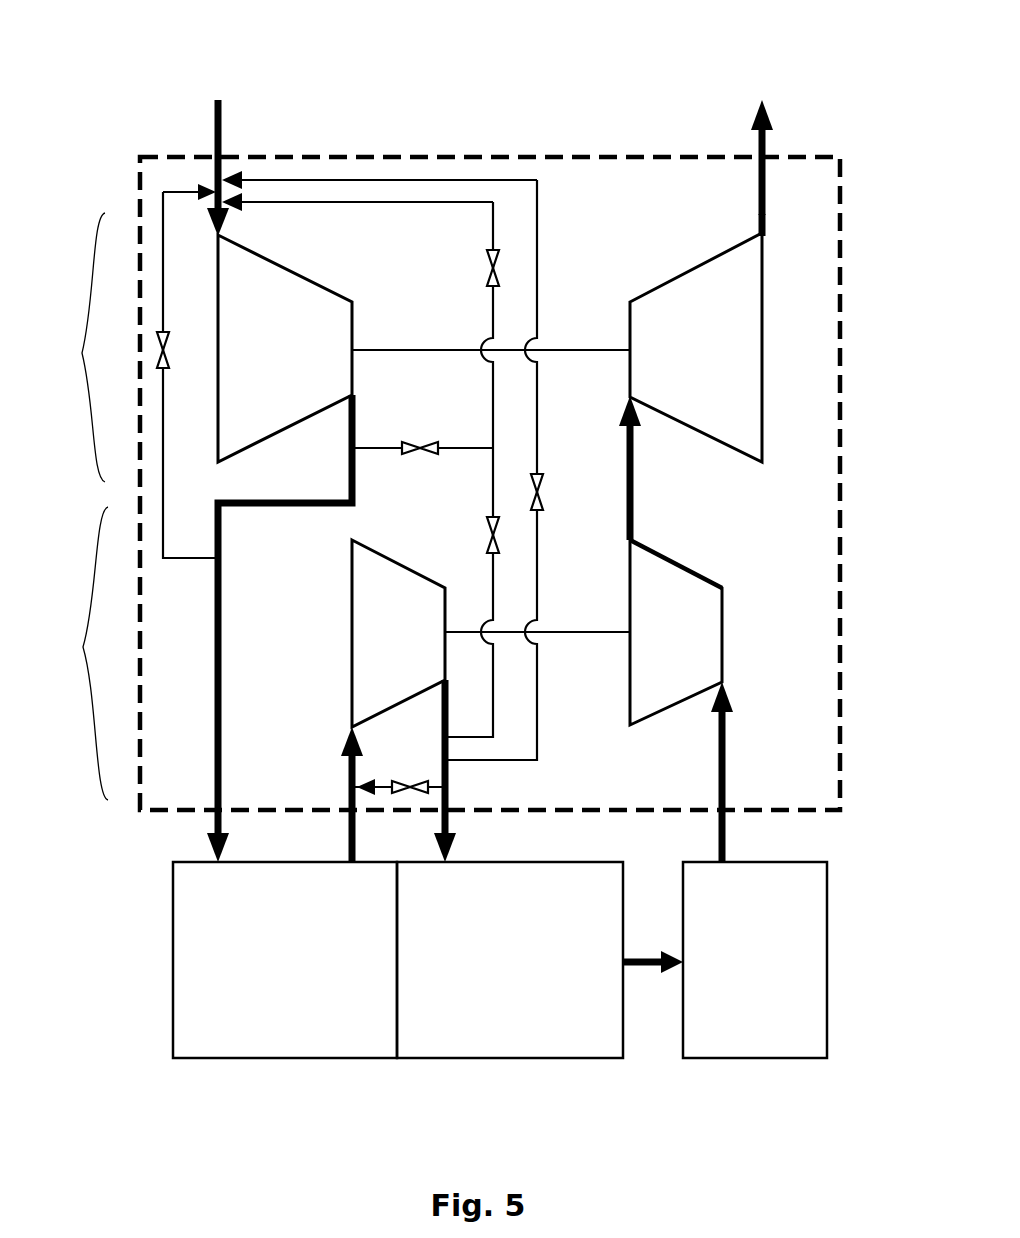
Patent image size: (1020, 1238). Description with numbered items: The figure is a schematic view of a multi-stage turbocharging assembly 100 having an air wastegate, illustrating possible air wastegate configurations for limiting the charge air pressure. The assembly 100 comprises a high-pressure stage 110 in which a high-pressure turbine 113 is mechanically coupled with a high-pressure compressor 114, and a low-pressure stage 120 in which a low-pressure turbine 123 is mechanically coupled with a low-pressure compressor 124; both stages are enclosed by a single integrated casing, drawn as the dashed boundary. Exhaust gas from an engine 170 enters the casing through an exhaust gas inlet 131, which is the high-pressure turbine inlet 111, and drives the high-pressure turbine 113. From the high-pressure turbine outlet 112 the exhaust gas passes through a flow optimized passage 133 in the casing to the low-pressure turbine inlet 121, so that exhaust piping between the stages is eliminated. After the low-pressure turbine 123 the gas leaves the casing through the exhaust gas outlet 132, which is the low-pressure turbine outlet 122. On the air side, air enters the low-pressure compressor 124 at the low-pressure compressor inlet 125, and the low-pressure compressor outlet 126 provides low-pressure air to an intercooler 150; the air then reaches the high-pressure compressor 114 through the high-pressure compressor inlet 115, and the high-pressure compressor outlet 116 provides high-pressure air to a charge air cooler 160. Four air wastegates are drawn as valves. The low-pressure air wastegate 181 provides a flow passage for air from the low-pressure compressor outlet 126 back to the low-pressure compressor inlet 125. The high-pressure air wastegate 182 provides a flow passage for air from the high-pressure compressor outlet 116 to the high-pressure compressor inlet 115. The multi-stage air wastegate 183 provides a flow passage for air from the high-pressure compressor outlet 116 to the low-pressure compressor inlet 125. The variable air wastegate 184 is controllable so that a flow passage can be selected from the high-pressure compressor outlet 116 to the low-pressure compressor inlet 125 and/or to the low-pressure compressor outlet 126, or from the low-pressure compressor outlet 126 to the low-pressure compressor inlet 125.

The multi-stage turbocharging assembly 100 is at (507, 118).
The high-pressure stage 110 is at (64, 655).
The high-pressure turbine inlet 111 is at (726, 736).
The high-pressure turbine outlet 112 is at (636, 545).
The high-pressure turbine 113 is at (658, 646).
The high-pressure compressor 114 is at (373, 643).
The high-pressure compressor inlet 115 is at (349, 745).
The high-pressure compressor outlet 116 is at (440, 697).
The low-pressure stage 120 is at (61, 369).
The low-pressure turbine inlet 121 is at (629, 412).
The low-pressure turbine outlet 122 is at (766, 214).
The low-pressure turbine 123 is at (680, 360).
The low-pressure compressor 124 is at (258, 365).
The low-pressure compressor inlet 125 is at (222, 140).
The low-pressure compressor outlet 126 is at (356, 413).
The exhaust gas inlet 131 is at (726, 736).
The exhaust gas outlet 132 is at (766, 214).
The passage 133 is at (634, 497).
The intercooler 150 is at (278, 986).
The charge air cooler 160 is at (477, 984).
The engine 170 is at (734, 986).
The low-pressure air wastegate 181 is at (176, 378).
The high-pressure air wastegate 182 is at (398, 800).
The multi-stage air wastegate 183 is at (562, 494).
The variable air wastegate 184 is at (475, 412).